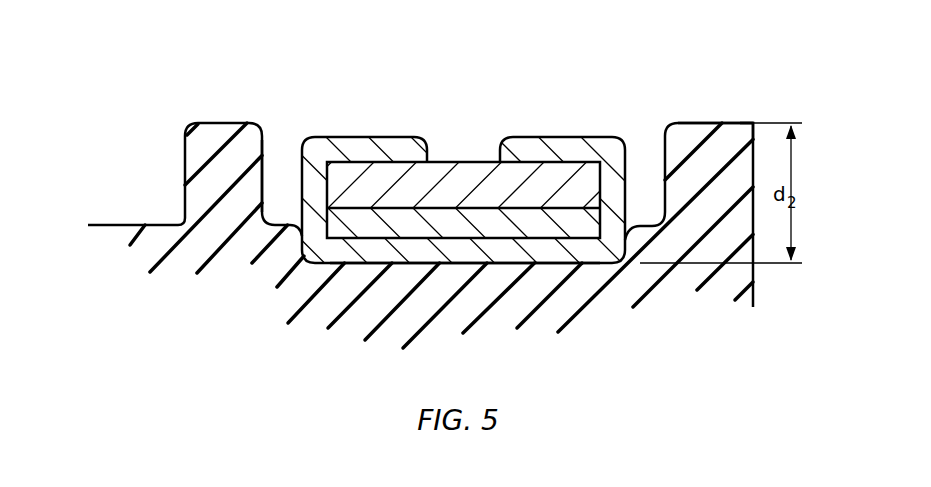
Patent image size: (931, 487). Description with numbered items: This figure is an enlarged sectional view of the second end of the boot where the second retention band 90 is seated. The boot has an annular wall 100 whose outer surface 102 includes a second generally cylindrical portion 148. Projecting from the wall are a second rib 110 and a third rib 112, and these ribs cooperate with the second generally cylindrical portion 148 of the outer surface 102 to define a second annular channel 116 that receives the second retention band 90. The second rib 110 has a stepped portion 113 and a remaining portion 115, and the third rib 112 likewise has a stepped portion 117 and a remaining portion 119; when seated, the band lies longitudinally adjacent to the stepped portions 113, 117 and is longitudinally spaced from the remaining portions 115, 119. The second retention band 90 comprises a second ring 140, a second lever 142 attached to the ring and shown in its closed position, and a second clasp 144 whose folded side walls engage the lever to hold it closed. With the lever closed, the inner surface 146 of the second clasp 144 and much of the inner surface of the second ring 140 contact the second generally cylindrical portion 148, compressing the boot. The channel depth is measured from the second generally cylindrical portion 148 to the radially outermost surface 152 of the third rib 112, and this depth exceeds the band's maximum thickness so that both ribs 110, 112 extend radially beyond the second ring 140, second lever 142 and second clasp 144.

The second retention band 90 is at (453, 221).
The annular wall 100 is at (112, 222).
The outer surface 102 is at (160, 225).
The second rib 110 is at (216, 110).
The third rib 112 is at (681, 108).
The stepped portion 113 is at (232, 231).
The remaining portion 115 is at (262, 185).
The second annular channel 116 is at (280, 140).
The stepped portion 117 is at (693, 247).
The remaining portion 119 is at (741, 118).
The second ring 140 is at (382, 222).
The second lever 142 is at (443, 162).
The second clasp 144 is at (390, 135).
The inner surface 146 is at (558, 266).
The second generally cylindrical portion 148 is at (456, 278).
The radially outermost surface 152 is at (705, 123).